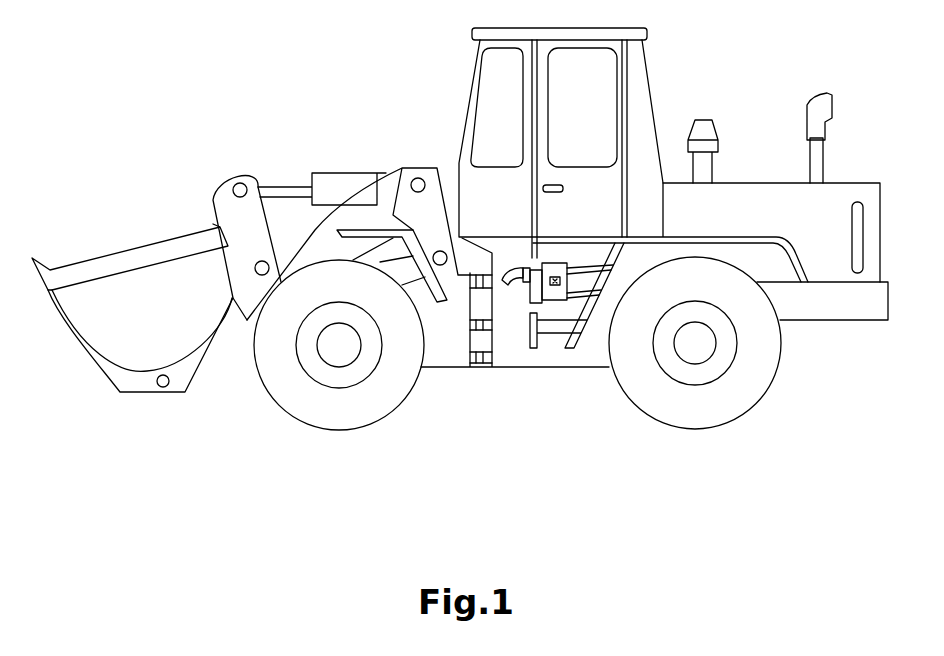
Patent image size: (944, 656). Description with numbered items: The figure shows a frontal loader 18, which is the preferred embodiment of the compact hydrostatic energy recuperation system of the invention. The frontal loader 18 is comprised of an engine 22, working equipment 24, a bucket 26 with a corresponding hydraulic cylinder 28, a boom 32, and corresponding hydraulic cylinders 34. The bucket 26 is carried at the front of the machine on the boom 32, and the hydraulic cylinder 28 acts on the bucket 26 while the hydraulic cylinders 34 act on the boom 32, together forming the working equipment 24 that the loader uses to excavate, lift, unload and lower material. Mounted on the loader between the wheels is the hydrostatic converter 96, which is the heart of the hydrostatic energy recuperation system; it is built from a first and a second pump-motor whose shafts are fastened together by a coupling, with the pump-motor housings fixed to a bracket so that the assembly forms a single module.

The frontal loader 18 is at (637, 117).
The engine 22 is at (813, 110).
The working equipment 24 is at (428, 170).
The bucket 26 is at (167, 248).
The hydraulic cylinder 28 is at (328, 183).
The boom 32 is at (290, 258).
The hydraulic cylinders 34 is at (393, 270).
The hydrostatic converter 96 is at (518, 303).